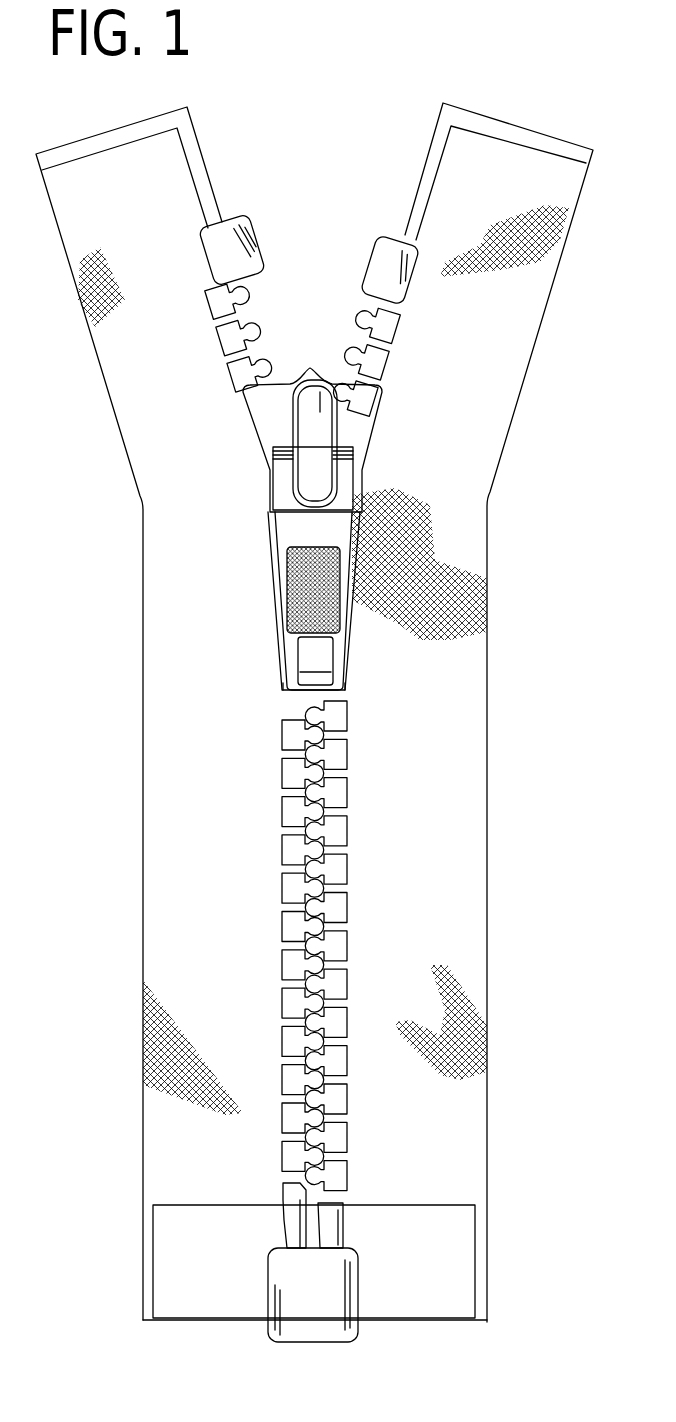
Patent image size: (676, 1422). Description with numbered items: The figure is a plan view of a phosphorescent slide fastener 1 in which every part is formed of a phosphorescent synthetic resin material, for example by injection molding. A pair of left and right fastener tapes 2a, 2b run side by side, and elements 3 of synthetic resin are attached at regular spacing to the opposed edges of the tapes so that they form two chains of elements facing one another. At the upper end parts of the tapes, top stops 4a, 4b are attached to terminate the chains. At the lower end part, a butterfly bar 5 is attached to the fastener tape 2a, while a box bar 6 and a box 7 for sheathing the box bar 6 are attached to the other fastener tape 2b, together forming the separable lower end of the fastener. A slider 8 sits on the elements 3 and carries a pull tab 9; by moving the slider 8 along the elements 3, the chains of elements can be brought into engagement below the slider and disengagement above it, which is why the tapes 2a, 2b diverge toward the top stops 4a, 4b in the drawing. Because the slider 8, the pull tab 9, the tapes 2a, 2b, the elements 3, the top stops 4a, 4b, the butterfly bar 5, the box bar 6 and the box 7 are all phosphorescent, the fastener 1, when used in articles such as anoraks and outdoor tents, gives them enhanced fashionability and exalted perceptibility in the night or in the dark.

The phosphorescent slide fastener 1 is at (500, 592).
The fastener tape 2a is at (157, 884).
The fastener tape 2b is at (476, 909).
The elements 3 is at (343, 827).
The top stop 4a is at (255, 227).
The top stop 4b is at (373, 270).
The butterfly bar 5 is at (287, 1190).
The box bar 6 is at (335, 1223).
The box 7 is at (348, 1293).
The slider 8 is at (367, 427).
The pull tab 9 is at (273, 555).